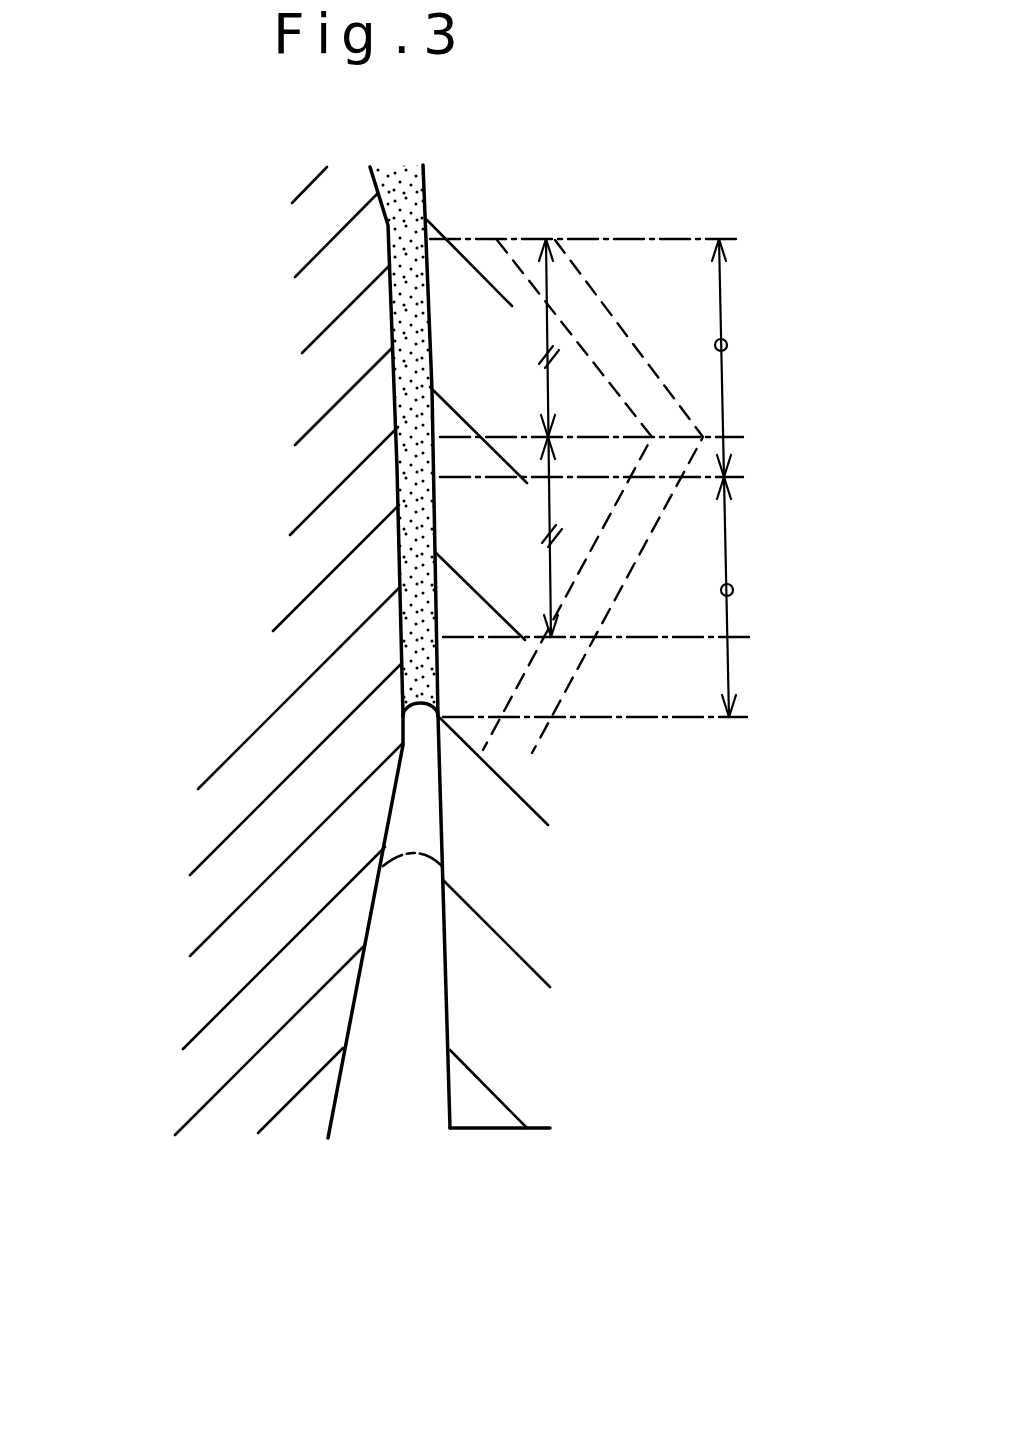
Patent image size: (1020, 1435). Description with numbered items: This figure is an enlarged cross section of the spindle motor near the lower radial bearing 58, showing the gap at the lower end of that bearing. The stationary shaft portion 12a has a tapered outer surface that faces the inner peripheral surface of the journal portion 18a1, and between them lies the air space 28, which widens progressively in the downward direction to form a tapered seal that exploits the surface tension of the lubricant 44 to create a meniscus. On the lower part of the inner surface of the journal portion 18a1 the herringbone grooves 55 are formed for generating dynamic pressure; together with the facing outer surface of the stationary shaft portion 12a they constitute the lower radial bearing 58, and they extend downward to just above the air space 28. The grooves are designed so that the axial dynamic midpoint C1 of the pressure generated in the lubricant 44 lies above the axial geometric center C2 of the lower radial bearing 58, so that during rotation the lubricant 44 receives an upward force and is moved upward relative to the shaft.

The stationary shaft portion 12a is at (280, 682).
The lubricant 44 is at (393, 473).
The lower radial bearing 58 is at (408, 563).
The air space 28 is at (405, 1022).
The journal portion 18a1 is at (492, 978).
The herringbone groove 55 is at (608, 367).
The axial dynamic midpoint C1 is at (621, 438).
The axial geometric center C2 is at (628, 478).